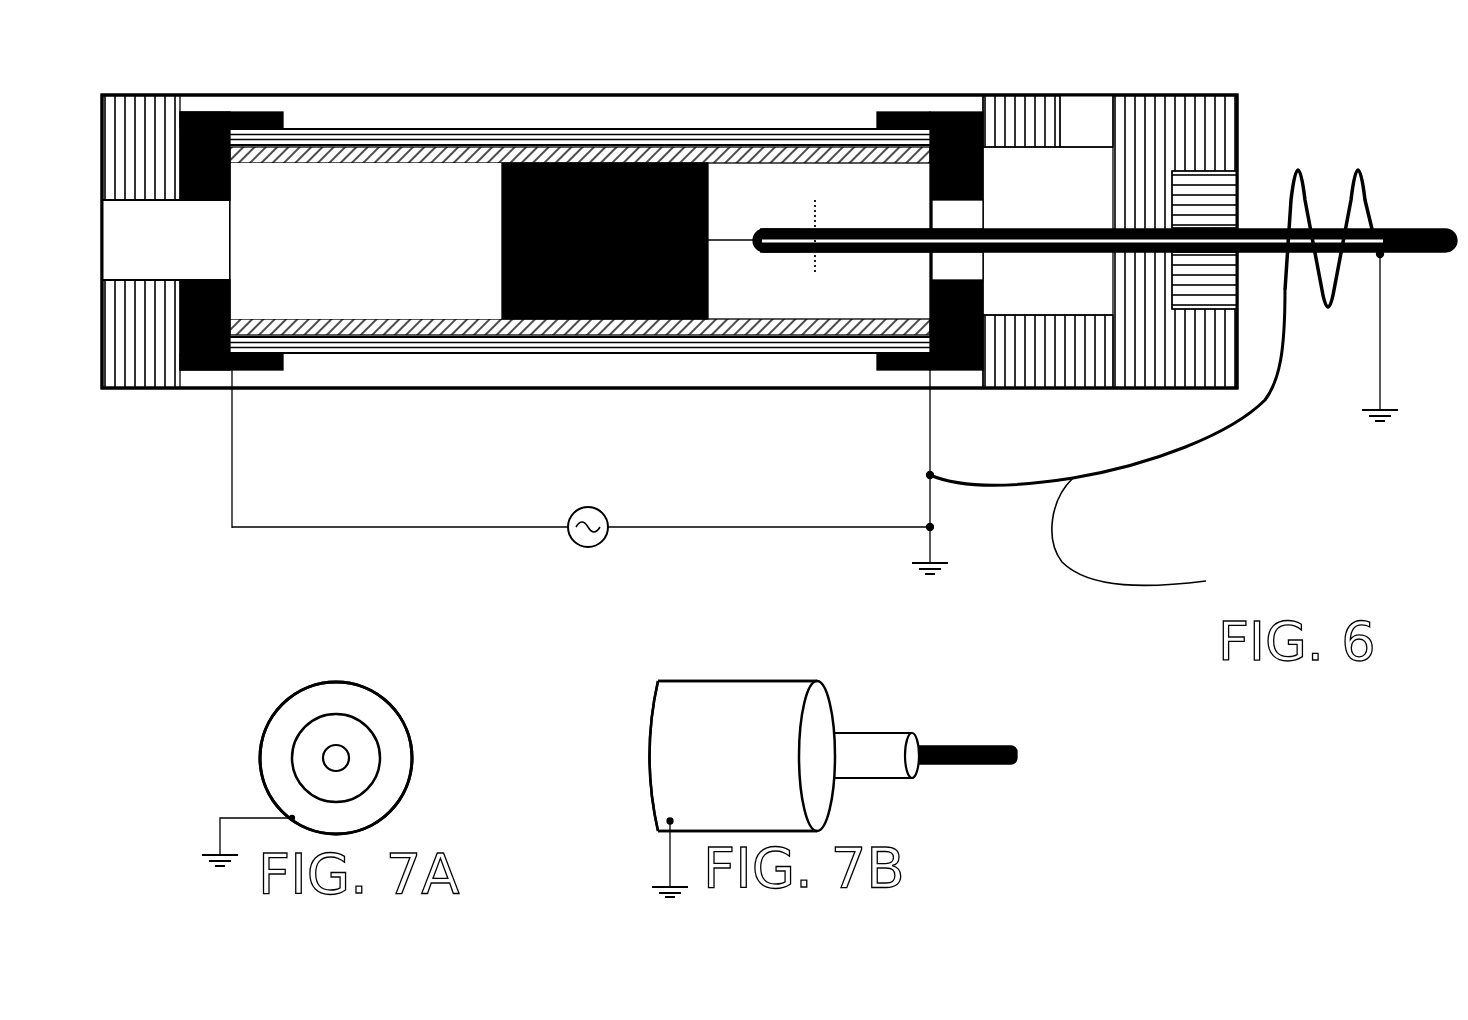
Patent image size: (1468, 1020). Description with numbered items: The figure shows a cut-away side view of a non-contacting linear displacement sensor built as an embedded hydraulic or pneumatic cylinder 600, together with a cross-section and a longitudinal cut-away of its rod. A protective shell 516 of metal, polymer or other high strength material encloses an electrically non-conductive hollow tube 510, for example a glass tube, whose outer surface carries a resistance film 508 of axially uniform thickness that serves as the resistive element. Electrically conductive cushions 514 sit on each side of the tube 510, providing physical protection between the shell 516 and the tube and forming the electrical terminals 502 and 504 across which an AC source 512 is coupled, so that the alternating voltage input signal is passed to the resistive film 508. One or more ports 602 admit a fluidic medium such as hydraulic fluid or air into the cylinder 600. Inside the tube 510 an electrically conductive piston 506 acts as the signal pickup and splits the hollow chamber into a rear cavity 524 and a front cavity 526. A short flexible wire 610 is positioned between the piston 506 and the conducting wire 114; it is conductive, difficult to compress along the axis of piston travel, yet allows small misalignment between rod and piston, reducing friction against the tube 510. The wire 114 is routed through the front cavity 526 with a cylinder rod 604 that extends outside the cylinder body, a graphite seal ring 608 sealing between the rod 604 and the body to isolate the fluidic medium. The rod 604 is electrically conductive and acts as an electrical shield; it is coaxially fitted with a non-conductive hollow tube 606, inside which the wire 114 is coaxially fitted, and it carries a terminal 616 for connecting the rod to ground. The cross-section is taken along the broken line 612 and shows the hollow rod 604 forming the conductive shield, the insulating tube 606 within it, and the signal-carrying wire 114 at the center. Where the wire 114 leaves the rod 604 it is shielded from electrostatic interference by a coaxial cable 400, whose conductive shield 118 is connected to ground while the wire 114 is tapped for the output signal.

In FIG. 6, the hydraulic or pneumatic cylinder 600 is at (184, 66).
In FIG. 6, the port 602 is at (607, 241).
In FIG. 6, the graphite seal ring 608 is at (1237, 184).
In FIG. 6, the protective shell 516 is at (492, 94).
In FIG. 6, the resistance film 508 is at (485, 129).
In FIG. 6, the electrically non-conductive hollow tube 510 is at (866, 165).
In FIG. 6, the rear cavity 524 is at (366, 241).
In FIG. 6, the electrically conductive piston 506 is at (501, 280).
In FIG. 6, the electrical terminal 502 is at (230, 372).
In FIG. 6, the electrical terminal 504 is at (924, 372).
In FIG. 6, the electrically conductive cushions 514 is at (284, 124).
In FIG. 6, the AC source 512 is at (572, 543).
In FIG. 6, the wire 114 is at (790, 245).
In FIG. 7A, the wire 114 is at (323, 763).
In FIG. 7B, the wire 114 is at (988, 746).
In FIG. 6, the short flexible wire 610 is at (716, 240).
In FIG. 6, the front cavity 526 is at (815, 221).
In FIG. 6, the broken line 612 is at (822, 258).
In FIG. 7A, the broken line 612 is at (253, 686).
In FIG. 7B, the broken line 612 is at (638, 660).
In FIG. 6, the hollow tube 606 is at (750, 237).
In FIG. 7A, the hollow tube 606 is at (380, 757).
In FIG. 7B, the hollow tube 606 is at (868, 733).
In FIG. 6, the cylinder rod 604 is at (920, 228).
In FIG. 7A, the cylinder rod 604 is at (388, 701).
In FIG. 7B, the cylinder rod 604 is at (712, 681).
In FIG. 6, the conductive shield 118 is at (987, 480).
In FIG. 6, the coaxial cable 400 is at (1371, 190).
In FIG. 6, the terminal 616 is at (1388, 255).